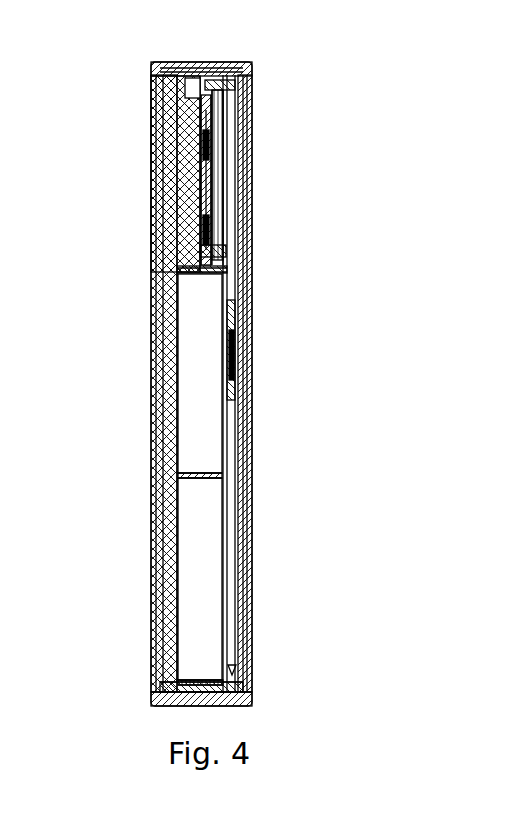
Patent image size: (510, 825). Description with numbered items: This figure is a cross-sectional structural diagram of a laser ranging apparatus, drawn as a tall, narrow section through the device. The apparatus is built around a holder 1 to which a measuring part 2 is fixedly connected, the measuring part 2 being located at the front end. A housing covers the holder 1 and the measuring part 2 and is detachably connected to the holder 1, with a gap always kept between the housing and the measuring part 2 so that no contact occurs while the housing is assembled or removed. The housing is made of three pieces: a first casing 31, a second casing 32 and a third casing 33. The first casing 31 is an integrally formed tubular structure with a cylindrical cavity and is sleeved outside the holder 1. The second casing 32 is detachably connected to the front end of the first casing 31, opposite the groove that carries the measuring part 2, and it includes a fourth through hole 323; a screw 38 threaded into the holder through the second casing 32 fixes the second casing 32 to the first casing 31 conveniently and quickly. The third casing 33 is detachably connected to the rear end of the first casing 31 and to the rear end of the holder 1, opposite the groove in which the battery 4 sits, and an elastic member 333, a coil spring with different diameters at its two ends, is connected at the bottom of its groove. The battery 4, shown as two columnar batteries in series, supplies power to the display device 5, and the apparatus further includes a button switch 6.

The holder 1 is at (163, 320).
The measuring part 2 is at (217, 88).
The first casing 31 is at (153, 515).
The second casing 32 is at (243, 82).
The fourth through hole 323 is at (225, 60).
The third casing 33 is at (173, 682).
The elastic member 333 is at (222, 679).
The screw 38 is at (178, 86).
The battery 4 is at (187, 440).
The display device 5 is at (240, 240).
The button switch 6 is at (245, 370).